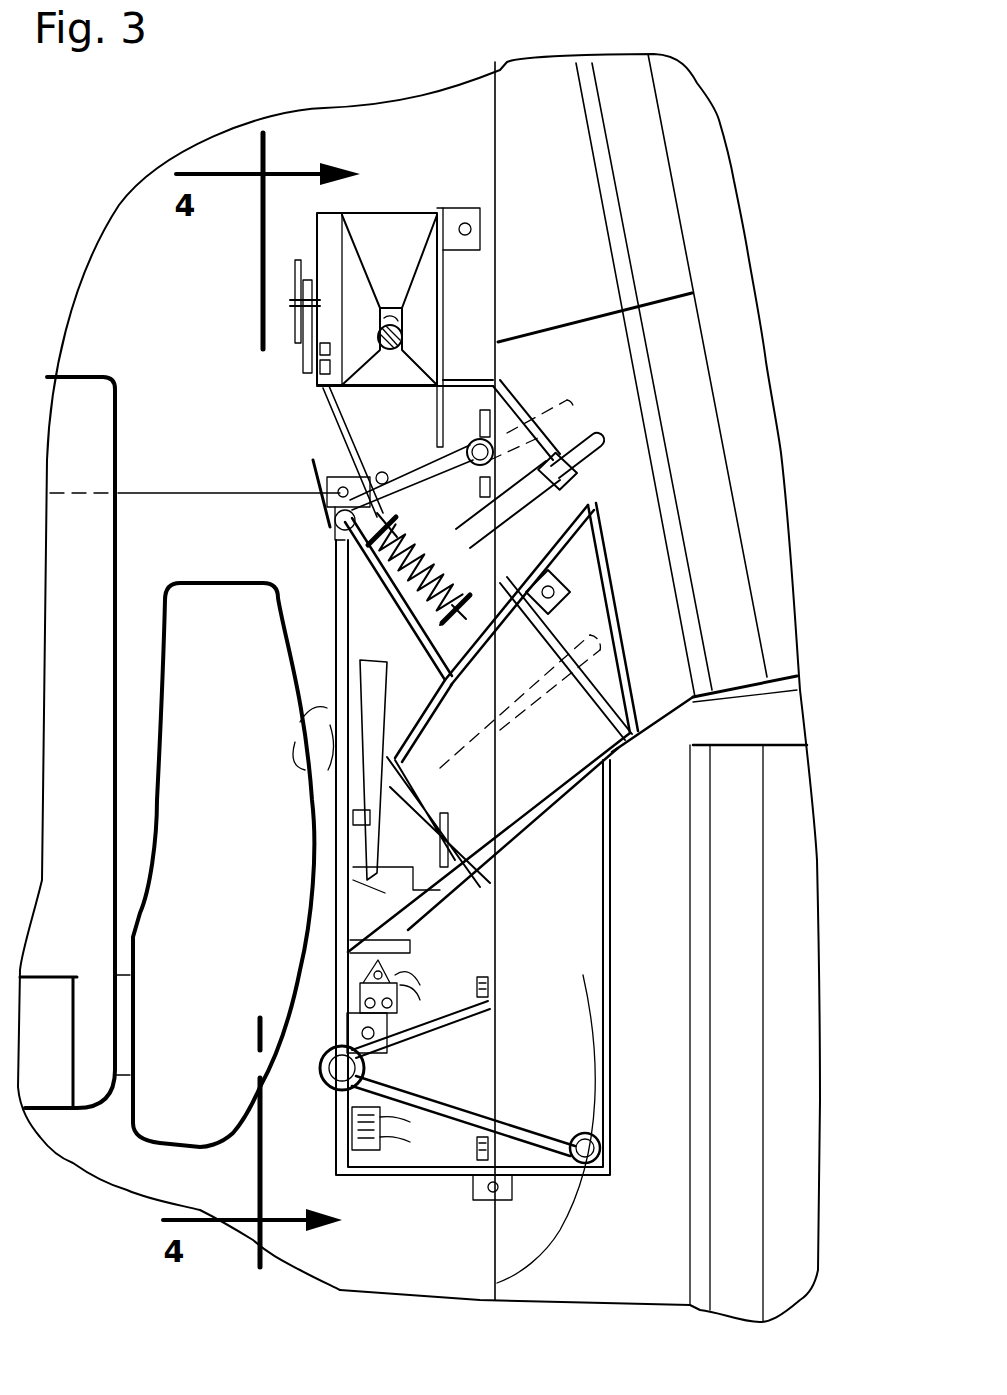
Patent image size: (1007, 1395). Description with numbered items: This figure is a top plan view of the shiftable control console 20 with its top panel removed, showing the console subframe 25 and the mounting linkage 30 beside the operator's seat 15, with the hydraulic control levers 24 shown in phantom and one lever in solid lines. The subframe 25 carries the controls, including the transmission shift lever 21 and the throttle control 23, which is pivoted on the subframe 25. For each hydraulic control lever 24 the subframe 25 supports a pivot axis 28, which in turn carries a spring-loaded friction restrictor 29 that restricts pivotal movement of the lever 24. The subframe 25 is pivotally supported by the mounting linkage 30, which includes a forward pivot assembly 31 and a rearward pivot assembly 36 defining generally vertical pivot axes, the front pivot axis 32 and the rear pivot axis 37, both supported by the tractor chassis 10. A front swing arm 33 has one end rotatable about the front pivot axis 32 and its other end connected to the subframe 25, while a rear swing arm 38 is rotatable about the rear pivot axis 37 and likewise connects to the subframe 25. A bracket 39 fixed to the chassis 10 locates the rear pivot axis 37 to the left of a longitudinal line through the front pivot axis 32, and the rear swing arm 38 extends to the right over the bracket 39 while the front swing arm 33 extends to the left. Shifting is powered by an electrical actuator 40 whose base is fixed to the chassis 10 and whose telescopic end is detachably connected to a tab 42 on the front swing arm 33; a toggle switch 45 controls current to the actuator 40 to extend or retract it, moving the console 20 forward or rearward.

The tractor chassis 10 is at (490, 933).
The operator's seat 15 is at (78, 368).
The control console 20 is at (634, 482).
The transmission shift lever 21 is at (402, 337).
The throttle control 23 is at (280, 307).
The hydraulic control levers 24 is at (552, 402).
The console subframe 25 is at (337, 587).
The pivot axis 28 is at (420, 587).
The spring-loaded friction restrictor 29 is at (415, 560).
The mounting linkage 30 is at (542, 1205).
The forward pivot assembly 31 is at (316, 441).
The front pivot axis 32 is at (513, 450).
The front swing arm 33 is at (390, 493).
The rearward pivot assembly 36 is at (555, 968).
The rear pivot axis 37 is at (362, 1067).
The rear swing arm 38 is at (513, 1123).
The bracket 39 is at (453, 1020).
The electrical actuator 40 is at (362, 672).
The tab 42 is at (380, 470).
The toggle switch 45 is at (380, 1150).